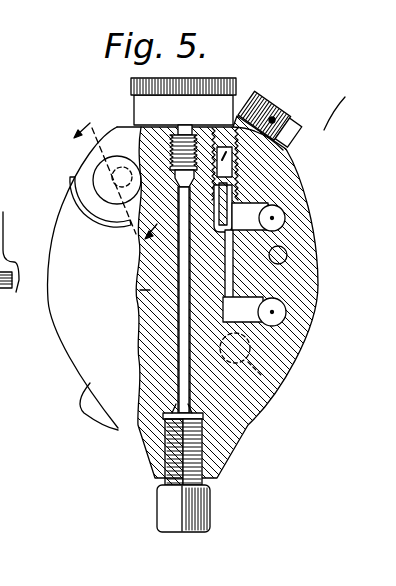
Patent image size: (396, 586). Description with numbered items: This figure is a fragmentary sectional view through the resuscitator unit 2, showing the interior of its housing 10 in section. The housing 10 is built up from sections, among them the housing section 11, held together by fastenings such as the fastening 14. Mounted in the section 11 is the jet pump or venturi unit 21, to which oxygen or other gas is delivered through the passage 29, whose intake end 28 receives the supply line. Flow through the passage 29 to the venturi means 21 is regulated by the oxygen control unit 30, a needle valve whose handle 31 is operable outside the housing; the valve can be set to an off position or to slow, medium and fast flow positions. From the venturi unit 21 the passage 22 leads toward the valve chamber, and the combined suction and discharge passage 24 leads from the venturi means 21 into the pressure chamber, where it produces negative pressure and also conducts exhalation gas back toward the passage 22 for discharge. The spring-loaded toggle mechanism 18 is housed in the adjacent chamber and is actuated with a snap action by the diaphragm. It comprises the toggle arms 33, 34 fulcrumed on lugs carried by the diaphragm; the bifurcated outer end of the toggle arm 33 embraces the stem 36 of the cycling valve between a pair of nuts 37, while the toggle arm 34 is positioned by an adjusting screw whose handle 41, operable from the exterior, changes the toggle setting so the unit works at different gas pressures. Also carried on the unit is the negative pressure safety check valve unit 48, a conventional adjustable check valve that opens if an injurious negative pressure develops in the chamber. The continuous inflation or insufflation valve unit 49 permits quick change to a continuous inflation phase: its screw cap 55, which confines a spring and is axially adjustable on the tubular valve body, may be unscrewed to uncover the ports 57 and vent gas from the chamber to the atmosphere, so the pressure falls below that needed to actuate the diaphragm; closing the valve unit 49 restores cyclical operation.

The resuscitator unit 2 is at (345, 107).
The housing 10 is at (304, 206).
The housing section 11 is at (284, 301).
The fastening 14 is at (286, 258).
The toggle mechanism 18 is at (140, 290).
The jet pump or venturi unit 21 is at (284, 150).
The passage 22 is at (222, 277).
The combined suction and discharge passage 24 is at (258, 228).
The intake end 28 is at (220, 426).
The passage 29 is at (179, 340).
The oxygen control unit 30 is at (134, 123).
The handle 31 is at (205, 78).
The toggle arm 33 is at (180, 311).
The toggle arm 34 is at (126, 238).
The stem 36 is at (252, 350).
The nuts 37 is at (266, 376).
The handle 41 is at (110, 160).
The negative pressure safety check valve unit 48 is at (78, 405).
The continuous inflation or insufflation valve unit 49 is at (284, 102).
The screw cap 55 is at (257, 102).
The ports 57 is at (280, 118).